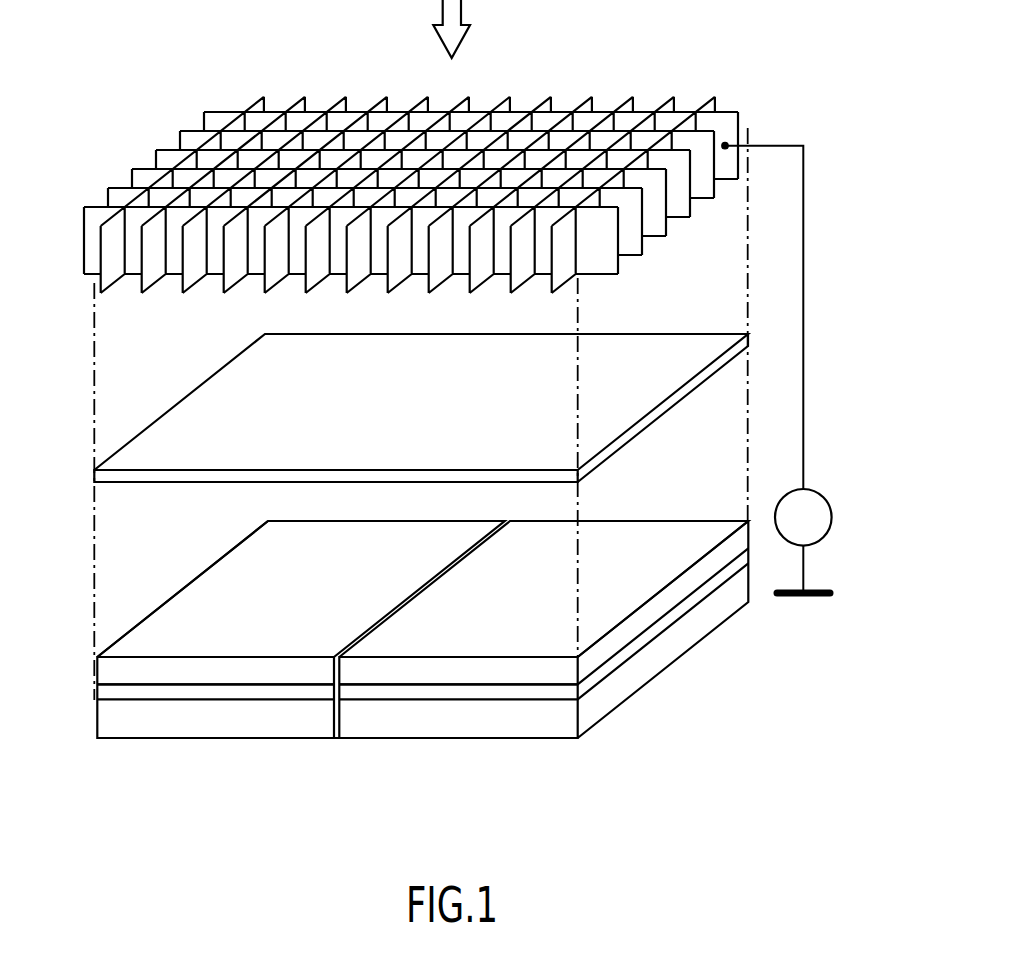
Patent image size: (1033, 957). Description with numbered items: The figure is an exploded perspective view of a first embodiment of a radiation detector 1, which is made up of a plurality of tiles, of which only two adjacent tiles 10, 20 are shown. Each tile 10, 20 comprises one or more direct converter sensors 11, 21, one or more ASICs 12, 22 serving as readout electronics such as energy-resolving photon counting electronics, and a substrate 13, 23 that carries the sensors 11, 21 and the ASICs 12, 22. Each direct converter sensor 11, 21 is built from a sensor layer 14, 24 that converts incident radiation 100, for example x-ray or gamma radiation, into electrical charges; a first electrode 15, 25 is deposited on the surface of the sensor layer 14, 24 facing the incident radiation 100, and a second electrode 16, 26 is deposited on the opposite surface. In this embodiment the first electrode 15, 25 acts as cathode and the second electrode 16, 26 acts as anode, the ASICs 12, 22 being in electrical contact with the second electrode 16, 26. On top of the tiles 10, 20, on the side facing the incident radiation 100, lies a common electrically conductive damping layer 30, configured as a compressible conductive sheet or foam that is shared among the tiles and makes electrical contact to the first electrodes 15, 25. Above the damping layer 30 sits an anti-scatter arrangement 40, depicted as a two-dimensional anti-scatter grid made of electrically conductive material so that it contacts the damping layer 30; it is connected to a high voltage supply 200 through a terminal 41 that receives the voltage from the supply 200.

The radiation detector 1 is at (687, 752).
The tile 10 is at (275, 663).
The direct converter sensor 11 is at (170, 574).
The ASIC 12 is at (120, 693).
The substrate 13 is at (124, 726).
The sensor layer 14 is at (120, 672).
The first electrode 15 is at (232, 591).
The second electrode 16 is at (170, 687).
The tile 20 is at (543, 634).
The direct converter sensor 21 is at (673, 512).
The ASIC 22 is at (639, 643).
The substrate 23 is at (541, 728).
The sensor layer 24 is at (672, 595).
The first electrode 25 is at (608, 550).
The second electrode 26 is at (493, 687).
The damping layer 30 is at (130, 440).
The anti-scatter arrangement 40 is at (157, 160).
The terminal 41 is at (725, 146).
The incident radiation 100 is at (465, 8).
The high voltage supply 200 is at (820, 538).